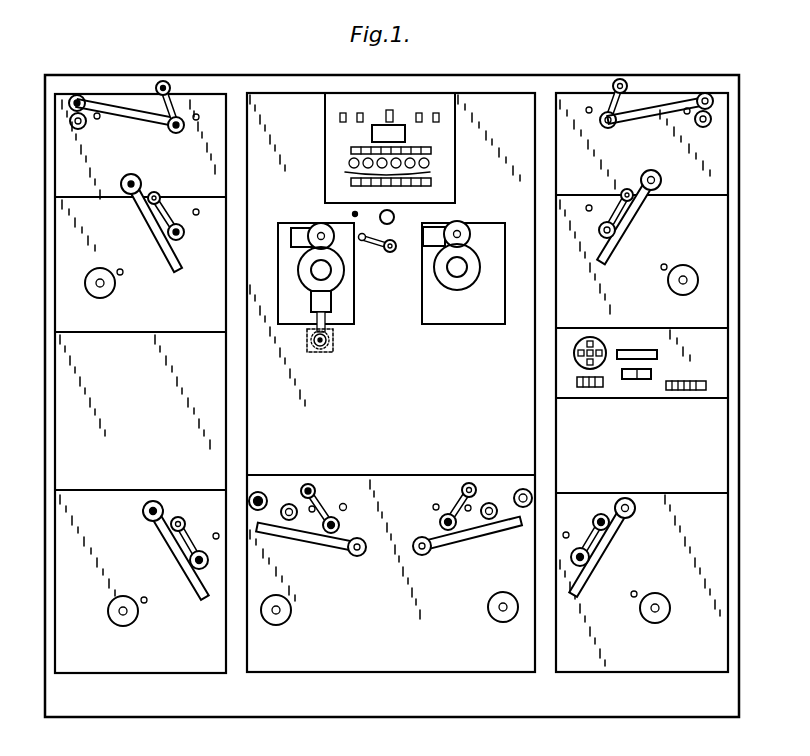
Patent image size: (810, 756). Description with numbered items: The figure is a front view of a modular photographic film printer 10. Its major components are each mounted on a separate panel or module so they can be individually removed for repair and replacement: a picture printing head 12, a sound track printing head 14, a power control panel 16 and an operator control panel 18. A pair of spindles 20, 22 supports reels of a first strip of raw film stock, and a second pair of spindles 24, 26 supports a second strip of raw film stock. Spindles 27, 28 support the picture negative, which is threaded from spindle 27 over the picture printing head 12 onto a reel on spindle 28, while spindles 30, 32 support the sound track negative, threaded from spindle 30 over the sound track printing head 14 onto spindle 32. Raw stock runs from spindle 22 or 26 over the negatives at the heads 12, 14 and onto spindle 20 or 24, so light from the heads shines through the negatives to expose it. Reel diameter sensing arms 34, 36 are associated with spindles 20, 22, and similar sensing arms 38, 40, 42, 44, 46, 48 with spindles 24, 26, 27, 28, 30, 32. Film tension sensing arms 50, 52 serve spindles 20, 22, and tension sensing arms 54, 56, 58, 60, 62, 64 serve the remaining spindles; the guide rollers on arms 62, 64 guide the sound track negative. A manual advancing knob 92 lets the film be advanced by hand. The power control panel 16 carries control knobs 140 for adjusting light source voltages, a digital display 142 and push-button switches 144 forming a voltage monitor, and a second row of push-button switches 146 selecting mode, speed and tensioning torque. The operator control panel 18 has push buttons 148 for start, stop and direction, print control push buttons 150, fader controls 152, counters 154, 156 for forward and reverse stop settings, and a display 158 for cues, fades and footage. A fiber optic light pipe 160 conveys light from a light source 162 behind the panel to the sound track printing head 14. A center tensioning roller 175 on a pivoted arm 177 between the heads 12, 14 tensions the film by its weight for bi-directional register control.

The photographic film printer 10 is at (328, 54).
The picture printing head 12 is at (492, 228).
The sound track printing head 14 is at (299, 225).
The power control panel 16 is at (428, 100).
The operator control panel 18 is at (720, 358).
The spindle 20 is at (72, 126).
The spindle 22 is at (712, 124).
The spindle 24 is at (92, 290).
The spindle 26 is at (697, 274).
The spindle 27 is at (662, 606).
The spindle 28 is at (500, 620).
The spindle 30 is at (285, 622).
The spindle 32 is at (108, 617).
The reel diameter sensing arm 34 is at (120, 100).
The reel diameter sensing arm 36 is at (657, 104).
The reel diameter sensing arm 38 is at (146, 224).
The reel diameter sensing arm 40 is at (636, 212).
The reel diameter sensing arm 42 is at (322, 542).
The reel diameter sensing arm 44 is at (166, 540).
The reel diameter sensing arm 46 is at (615, 536).
The reel diameter sensing arm 48 is at (466, 542).
The film tension sensing arm 50 is at (180, 98).
The film tension sensing arm 52 is at (605, 98).
The tension sensing arm 54 is at (168, 200).
The tension sensing arm 56 is at (612, 212).
The tension sensing arm 58 is at (590, 534).
The tension sensing arm 60 is at (460, 497).
The tension sensing arm 62 is at (321, 497).
The tension sensing arm 64 is at (186, 532).
The manual advancing knob 92 is at (400, 213).
The control knobs 140 is at (430, 163).
The digital display 142 is at (393, 134).
The push-button switches 144 is at (344, 144).
The second row of push-button switches 146 is at (338, 185).
The push buttons 148 is at (597, 318).
The print control push buttons 150 is at (590, 388).
The fader controls 152 is at (700, 380).
The counter 154 is at (632, 380).
The counter 156 is at (646, 379).
The display 158 is at (634, 352).
The fiber optic light pipe 160 is at (326, 300).
The light source 162 is at (334, 337).
The center tensioning roller 175 is at (394, 252).
The arm 177 is at (377, 250).